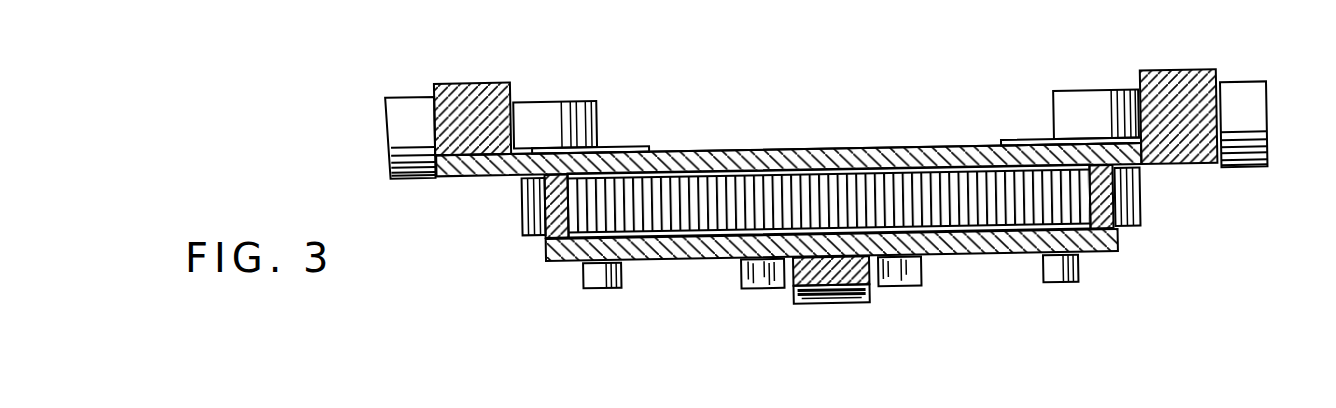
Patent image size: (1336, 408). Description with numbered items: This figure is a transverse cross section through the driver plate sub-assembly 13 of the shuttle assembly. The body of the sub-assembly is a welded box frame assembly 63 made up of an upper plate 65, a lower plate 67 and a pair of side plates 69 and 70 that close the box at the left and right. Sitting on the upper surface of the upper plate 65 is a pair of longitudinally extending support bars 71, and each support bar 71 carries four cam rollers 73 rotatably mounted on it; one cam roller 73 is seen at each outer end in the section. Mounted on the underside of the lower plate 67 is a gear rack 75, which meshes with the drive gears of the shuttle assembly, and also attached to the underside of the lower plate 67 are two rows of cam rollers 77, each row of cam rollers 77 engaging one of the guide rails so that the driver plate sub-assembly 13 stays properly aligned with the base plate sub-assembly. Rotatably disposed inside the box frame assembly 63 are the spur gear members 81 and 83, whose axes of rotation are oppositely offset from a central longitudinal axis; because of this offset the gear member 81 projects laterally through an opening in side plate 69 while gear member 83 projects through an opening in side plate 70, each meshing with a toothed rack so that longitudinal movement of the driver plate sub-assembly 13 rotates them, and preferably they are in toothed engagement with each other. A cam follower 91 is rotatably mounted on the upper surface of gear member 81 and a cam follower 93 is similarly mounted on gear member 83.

The driver plate sub-assembly 13 is at (820, 106).
The welded box frame assembly 63 is at (896, 148).
The upper plate 65 is at (783, 149).
The lower plate 67 is at (672, 256).
The side plate 69 is at (1141, 209).
The side plate 70 is at (552, 200).
The support bar 71 is at (462, 80).
The cam roller 73 is at (400, 140).
The gear rack 75 is at (814, 302).
The cam roller 77 is at (596, 284).
The spur gear member 81 is at (947, 218).
The spur gear member 83 is at (522, 220).
The cam follower 91 is at (1098, 104).
The cam follower 93 is at (552, 106).